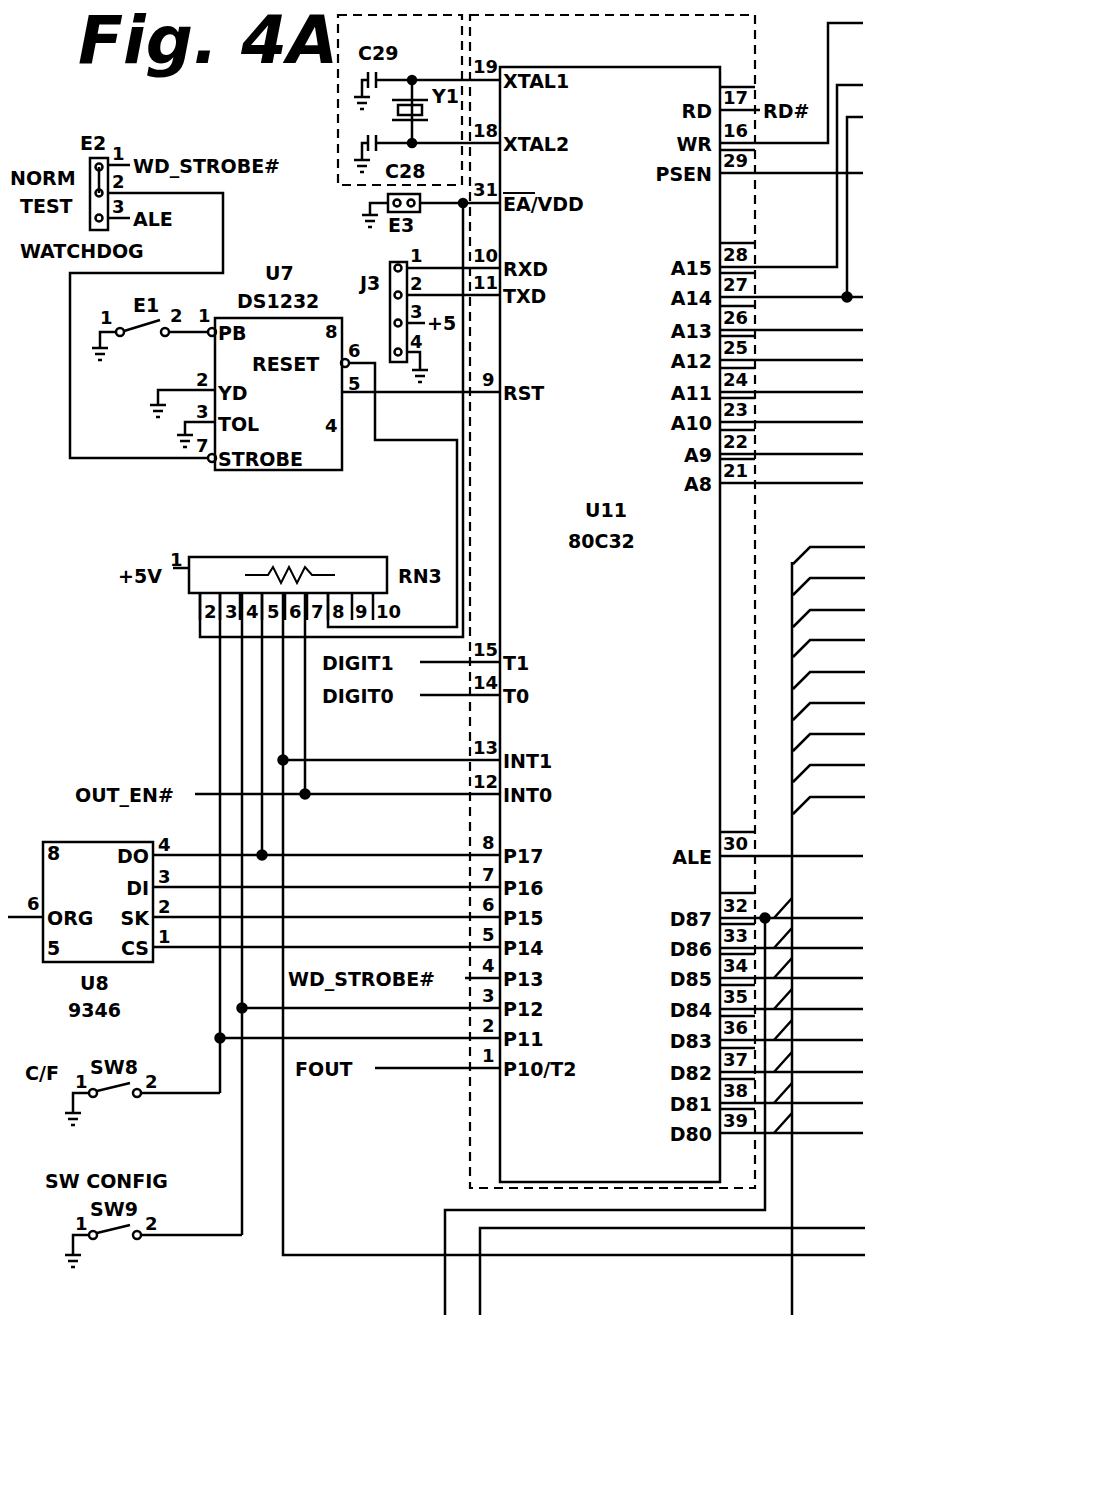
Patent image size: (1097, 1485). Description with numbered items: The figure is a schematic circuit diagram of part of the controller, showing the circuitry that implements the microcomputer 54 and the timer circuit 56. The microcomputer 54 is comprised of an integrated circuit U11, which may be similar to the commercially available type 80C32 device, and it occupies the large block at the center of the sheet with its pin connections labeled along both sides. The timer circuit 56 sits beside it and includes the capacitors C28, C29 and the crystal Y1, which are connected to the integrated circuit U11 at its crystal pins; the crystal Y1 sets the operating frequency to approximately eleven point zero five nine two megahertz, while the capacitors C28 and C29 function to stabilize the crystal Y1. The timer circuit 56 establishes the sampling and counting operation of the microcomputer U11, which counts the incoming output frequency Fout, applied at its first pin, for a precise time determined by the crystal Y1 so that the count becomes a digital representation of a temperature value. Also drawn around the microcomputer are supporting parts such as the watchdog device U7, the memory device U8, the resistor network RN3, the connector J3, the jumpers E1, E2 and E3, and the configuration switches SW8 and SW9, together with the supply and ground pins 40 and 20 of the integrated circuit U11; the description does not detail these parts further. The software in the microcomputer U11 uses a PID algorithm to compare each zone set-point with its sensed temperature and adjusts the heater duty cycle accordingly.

The microcomputer 54 is at (755, 197).
The timer circuit 56 is at (338, 105).
The integrated circuit U11 is at (610, 624).
The DS1232 watchdog U7 is at (278, 394).
The 9346 EEPROM U8 is at (80, 902).
The resistor network RN3 is at (280, 588).
The serial connector J3 is at (409, 322).
The jumper E1 is at (150, 340).
The jumper E2 is at (110, 194).
The jumper E3 is at (391, 210).
The crystal Y1 is at (410, 111).
The capacitor C28 is at (383, 153).
The capacitor C29 is at (383, 90).
The switch SW8 is at (142, 1104).
The switch SW9 is at (153, 1246).
The VCC pin 40 is at (696, 83).
The pushkey 20 is at (696, 1165).